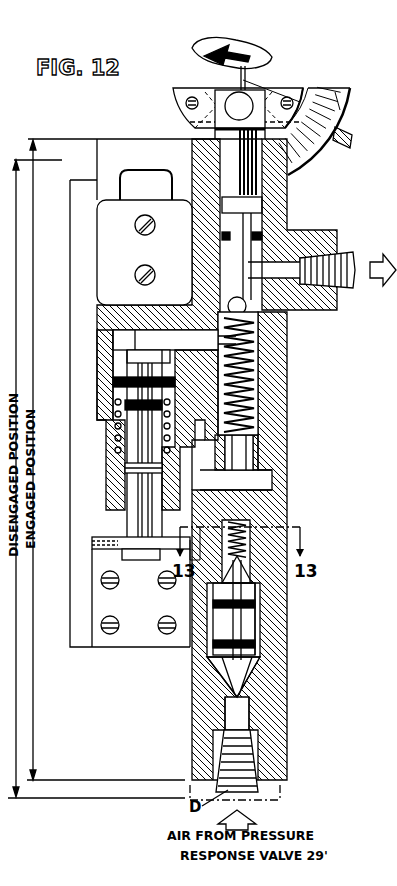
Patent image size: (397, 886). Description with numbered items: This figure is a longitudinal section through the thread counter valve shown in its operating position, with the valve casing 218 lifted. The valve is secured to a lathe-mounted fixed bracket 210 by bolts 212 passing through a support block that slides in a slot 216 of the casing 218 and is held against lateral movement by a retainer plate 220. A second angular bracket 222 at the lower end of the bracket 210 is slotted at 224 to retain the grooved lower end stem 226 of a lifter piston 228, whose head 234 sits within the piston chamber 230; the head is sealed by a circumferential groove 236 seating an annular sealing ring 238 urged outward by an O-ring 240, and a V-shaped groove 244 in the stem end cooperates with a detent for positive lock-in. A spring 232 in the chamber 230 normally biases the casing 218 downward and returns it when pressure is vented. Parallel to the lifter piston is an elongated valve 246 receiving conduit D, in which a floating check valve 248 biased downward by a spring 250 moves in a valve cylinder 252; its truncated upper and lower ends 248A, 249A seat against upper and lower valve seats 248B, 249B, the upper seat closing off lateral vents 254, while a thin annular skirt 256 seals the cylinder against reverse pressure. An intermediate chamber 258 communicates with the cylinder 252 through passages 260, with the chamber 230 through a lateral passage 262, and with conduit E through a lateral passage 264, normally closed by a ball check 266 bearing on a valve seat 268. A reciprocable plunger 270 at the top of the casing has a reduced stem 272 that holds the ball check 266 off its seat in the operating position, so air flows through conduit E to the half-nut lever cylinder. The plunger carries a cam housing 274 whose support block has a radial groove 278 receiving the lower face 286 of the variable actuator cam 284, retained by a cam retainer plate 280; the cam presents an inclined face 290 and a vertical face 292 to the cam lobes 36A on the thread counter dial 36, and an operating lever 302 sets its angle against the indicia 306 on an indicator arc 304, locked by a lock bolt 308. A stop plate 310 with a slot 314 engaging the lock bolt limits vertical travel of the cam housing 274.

The thread counter dial 36 is at (236, 47).
The cam lobes 36A is at (222, 66).
The fixed bracket 210 is at (76, 204).
The bolts 212 is at (151, 272).
The slot 216 is at (120, 191).
The valve casing 218 is at (134, 139).
The retainer plate 220 is at (103, 243).
The angular bracket 222 is at (95, 568).
The slot 224 is at (122, 540).
The lower end stem 226 is at (140, 561).
The lifter piston 228 is at (130, 356).
The piston chamber 230 is at (114, 340).
The spring 232 is at (126, 416).
The piston head 234 is at (129, 332).
The circumferential groove 236 is at (128, 376).
The annular sealing ring 238 is at (122, 383).
The O-ring 240 is at (120, 399).
The V-shaped groove 244 is at (118, 470).
The elongated valve 246 is at (288, 488).
The floating check valve 248 is at (260, 625).
The truncated upper end 248A is at (262, 580).
The upper valve seat 248B is at (252, 606).
The truncated lower end 249A is at (256, 662).
The lower valve seat 249B is at (246, 682).
The spring 250 is at (262, 523).
The valve cylinder 252 is at (280, 637).
The lateral vents 254 is at (198, 566).
The annular skirt 256 is at (252, 648).
The intermediate chamber 258 is at (256, 411).
The passages 260 is at (262, 506).
The lateral passage 262 is at (174, 332).
The lateral passage 264 is at (272, 258).
The ball check 266 is at (270, 342).
The valve seat 268 is at (285, 316).
The plunger 270 is at (262, 191).
The stem 272 is at (258, 218).
The cam housing 274 is at (175, 108).
The radial groove 278 is at (192, 94).
The cam retainer plate 280 is at (298, 97).
The variable actuator cam 284 is at (255, 78).
The lower face 286 is at (226, 118).
The inclined face 290 is at (254, 88).
The vertical face 292 is at (241, 81).
The operating lever 302 is at (348, 147).
The indicator arc 304 is at (346, 106).
The indicia 306 is at (336, 103).
The lock bolt 308 is at (222, 136).
The stop plate 310 is at (252, 136).
The slot 314 is at (239, 162).
The conduit E is at (355, 256).